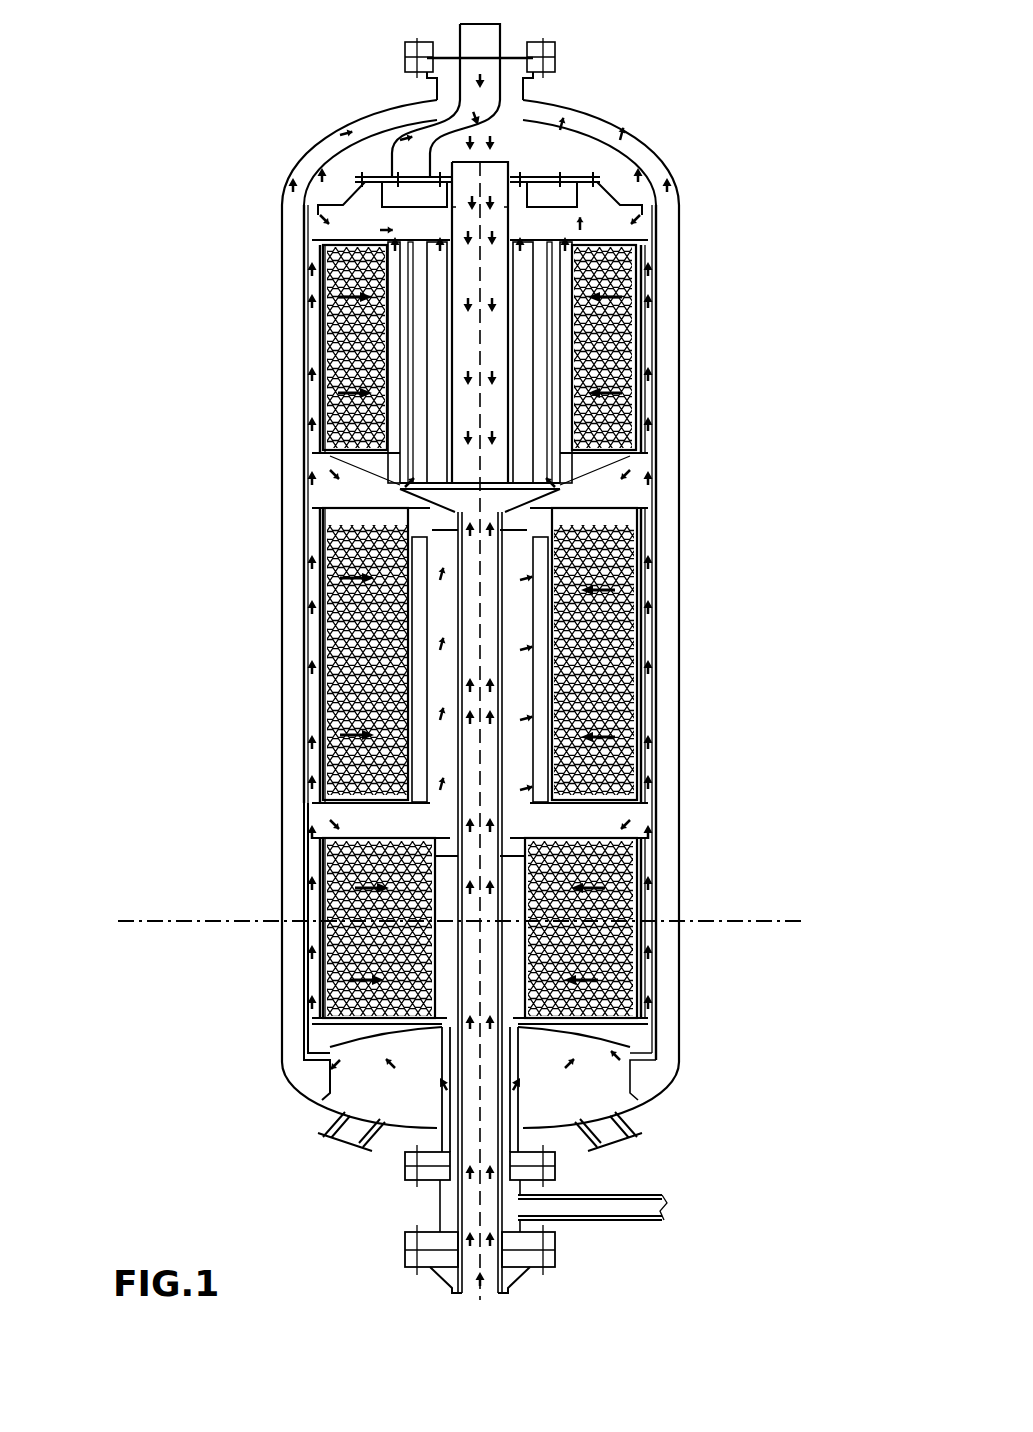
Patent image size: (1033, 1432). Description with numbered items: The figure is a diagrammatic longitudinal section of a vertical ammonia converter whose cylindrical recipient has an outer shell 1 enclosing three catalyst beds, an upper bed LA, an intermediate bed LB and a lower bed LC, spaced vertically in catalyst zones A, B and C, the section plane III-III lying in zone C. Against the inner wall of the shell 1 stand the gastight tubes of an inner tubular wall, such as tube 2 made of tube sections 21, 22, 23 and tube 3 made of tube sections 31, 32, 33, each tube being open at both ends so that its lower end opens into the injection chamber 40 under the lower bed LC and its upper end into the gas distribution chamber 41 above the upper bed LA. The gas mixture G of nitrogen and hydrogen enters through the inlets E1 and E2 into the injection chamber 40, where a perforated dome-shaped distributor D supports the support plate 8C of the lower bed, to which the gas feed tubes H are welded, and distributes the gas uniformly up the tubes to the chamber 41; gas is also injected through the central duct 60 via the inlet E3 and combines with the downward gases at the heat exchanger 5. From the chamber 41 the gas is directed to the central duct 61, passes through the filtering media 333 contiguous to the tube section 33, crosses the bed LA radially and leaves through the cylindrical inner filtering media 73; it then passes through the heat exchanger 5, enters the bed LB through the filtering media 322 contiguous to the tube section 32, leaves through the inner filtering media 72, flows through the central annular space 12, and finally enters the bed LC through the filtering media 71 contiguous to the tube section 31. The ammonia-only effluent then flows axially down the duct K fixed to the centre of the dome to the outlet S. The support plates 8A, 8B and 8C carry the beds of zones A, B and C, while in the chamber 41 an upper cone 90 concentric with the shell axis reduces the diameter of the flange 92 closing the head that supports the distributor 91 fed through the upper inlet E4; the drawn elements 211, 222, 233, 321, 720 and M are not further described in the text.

The outer shell 1 is at (683, 866).
The tube 2 is at (652, 762).
The tube 3 is at (312, 494).
The heat exchanger 5 is at (540, 465).
The central annular space 12 is at (457, 635).
The tube section 21 is at (645, 905).
The tube section 22 is at (645, 640).
The tube section 23 is at (645, 377).
The tube section 31 is at (310, 997).
The tube section 32 is at (312, 567).
The tube section 33 is at (308, 328).
The injection chamber 40 is at (602, 1080).
The gas distribution chamber 41 is at (565, 150).
The central duct 60 is at (500, 745).
The central duct 61 is at (565, 425).
The filtering media 71 is at (650, 845).
The inner filtering media 72 is at (655, 700).
The cylindrical inner filtering media 73 is at (637, 256).
The upper cone 90 is at (602, 187).
The distributor 91 is at (607, 174).
The flange 92 is at (598, 168).
The section C right catalyst bed 211 is at (640, 990).
The section B right catalyst bed 222 is at (643, 575).
The section A right catalyst bed 233 is at (643, 315).
The section C left catalyst bed 321 is at (320, 965).
The filtering media 322 is at (310, 725).
The filtering media 333 is at (330, 293).
The perforated plate 720 is at (300, 770).
The support plate 8A is at (335, 458).
The support plate 8B is at (655, 800).
The support plate 8C is at (312, 1018).
The catalyst zone A is at (282, 413).
The catalyst zone B is at (282, 684).
The catalyst zone C is at (280, 908).
The dome-shaped distributor D is at (323, 1055).
The inlet E1 is at (620, 1125).
The inlet E2 is at (330, 1135).
The inlet E3 is at (487, 1278).
The upper inlet E4 is at (468, 37).
The gas mixture G is at (487, 42).
The gas feed tubes H is at (320, 953).
The duct K is at (455, 1135).
The upper catalyst bed LA is at (322, 360).
The intermediate catalyst bed LB is at (320, 612).
The lower catalyst bed LC is at (313, 875).
The section A bottom plate right M is at (565, 492).
The outlet S is at (672, 1207).
The section plane III is at (802, 912).